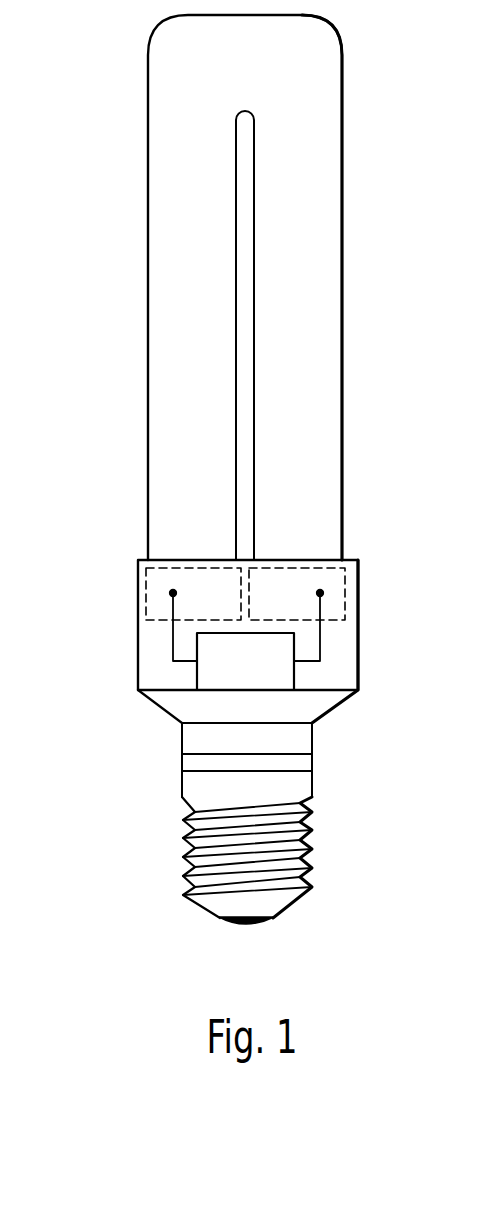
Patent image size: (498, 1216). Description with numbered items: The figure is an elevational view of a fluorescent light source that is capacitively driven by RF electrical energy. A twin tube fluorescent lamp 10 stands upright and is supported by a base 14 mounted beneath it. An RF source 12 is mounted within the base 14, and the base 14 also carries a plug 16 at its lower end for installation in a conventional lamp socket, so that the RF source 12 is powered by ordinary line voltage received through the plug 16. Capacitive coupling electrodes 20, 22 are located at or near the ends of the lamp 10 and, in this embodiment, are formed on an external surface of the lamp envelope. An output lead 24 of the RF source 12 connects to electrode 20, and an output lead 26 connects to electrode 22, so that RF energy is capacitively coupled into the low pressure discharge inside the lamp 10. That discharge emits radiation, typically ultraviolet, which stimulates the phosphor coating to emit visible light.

The twin tube fluorescent lamp 10 is at (140, 285).
The RF source 12 is at (197, 676).
The base 14 is at (363, 670).
The plug 16 is at (183, 857).
The capacitive coupling electrode 20 is at (158, 586).
The capacitive coupling electrode 22 is at (318, 570).
The output lead 24 is at (173, 640).
The output lead 26 is at (322, 630).